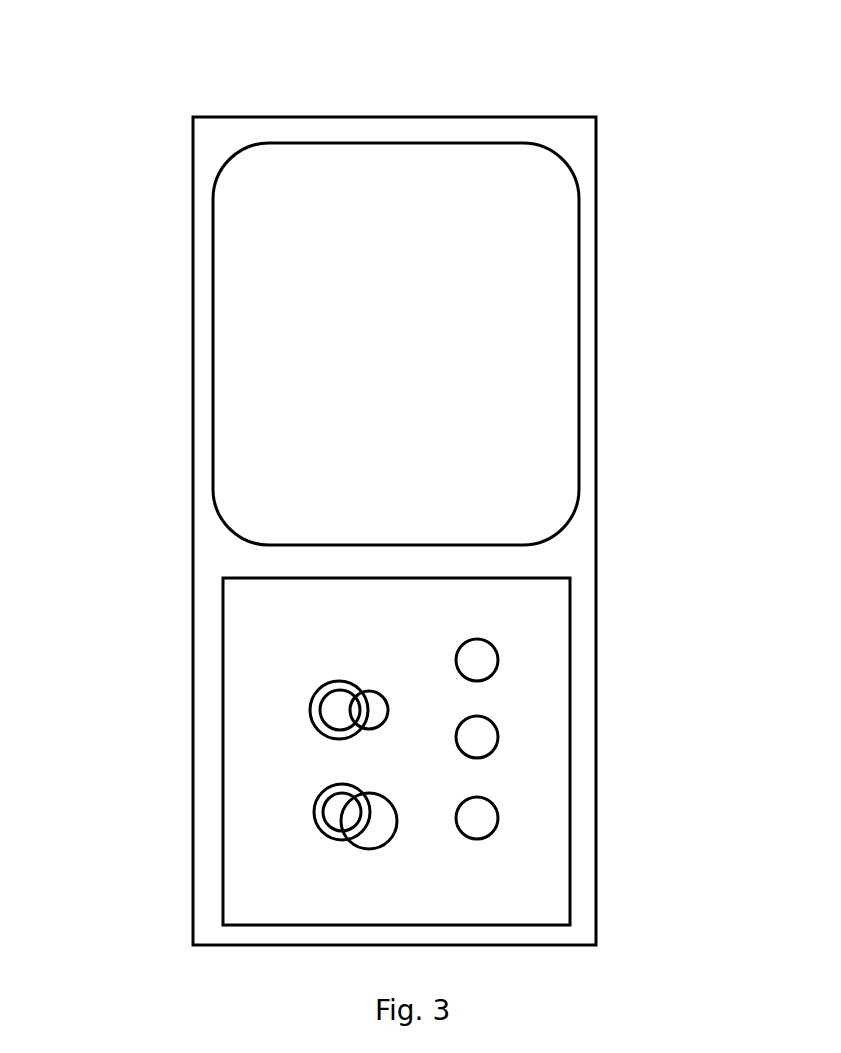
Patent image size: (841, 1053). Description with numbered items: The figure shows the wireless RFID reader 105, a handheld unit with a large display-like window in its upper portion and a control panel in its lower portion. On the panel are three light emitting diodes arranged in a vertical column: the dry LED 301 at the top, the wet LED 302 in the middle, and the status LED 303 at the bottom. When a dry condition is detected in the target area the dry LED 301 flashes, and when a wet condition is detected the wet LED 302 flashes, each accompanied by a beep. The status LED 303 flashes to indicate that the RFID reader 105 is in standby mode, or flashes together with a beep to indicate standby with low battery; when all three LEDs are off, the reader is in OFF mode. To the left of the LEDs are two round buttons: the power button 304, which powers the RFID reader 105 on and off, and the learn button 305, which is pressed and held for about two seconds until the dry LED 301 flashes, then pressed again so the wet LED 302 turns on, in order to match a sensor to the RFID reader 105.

The RFID reader 105 is at (147, 103).
The dry LED 301 is at (480, 660).
The wet LED 302 is at (485, 737).
The status LED 303 is at (480, 818).
The power button 304 is at (343, 710).
The learn button 305 is at (333, 815).